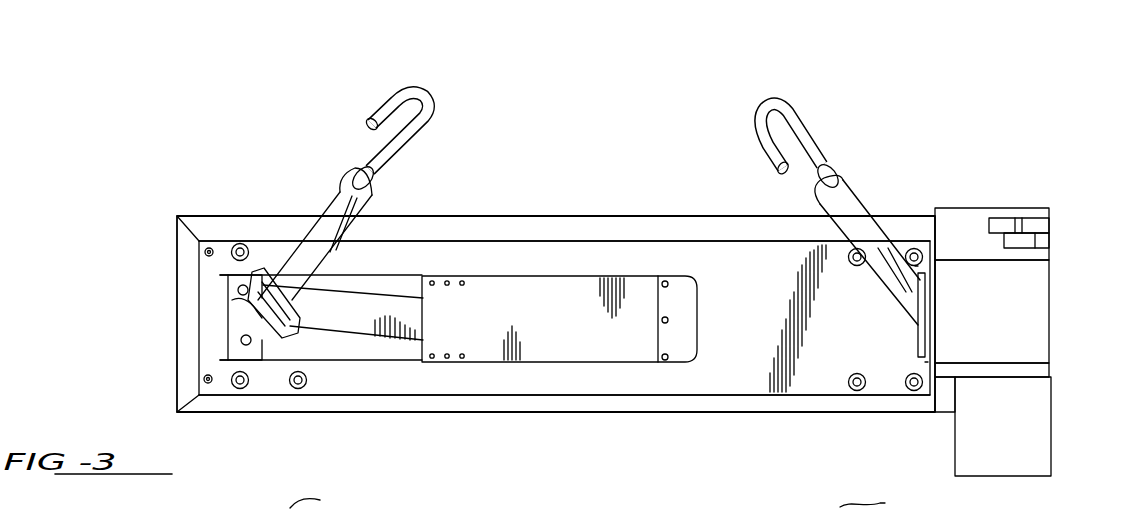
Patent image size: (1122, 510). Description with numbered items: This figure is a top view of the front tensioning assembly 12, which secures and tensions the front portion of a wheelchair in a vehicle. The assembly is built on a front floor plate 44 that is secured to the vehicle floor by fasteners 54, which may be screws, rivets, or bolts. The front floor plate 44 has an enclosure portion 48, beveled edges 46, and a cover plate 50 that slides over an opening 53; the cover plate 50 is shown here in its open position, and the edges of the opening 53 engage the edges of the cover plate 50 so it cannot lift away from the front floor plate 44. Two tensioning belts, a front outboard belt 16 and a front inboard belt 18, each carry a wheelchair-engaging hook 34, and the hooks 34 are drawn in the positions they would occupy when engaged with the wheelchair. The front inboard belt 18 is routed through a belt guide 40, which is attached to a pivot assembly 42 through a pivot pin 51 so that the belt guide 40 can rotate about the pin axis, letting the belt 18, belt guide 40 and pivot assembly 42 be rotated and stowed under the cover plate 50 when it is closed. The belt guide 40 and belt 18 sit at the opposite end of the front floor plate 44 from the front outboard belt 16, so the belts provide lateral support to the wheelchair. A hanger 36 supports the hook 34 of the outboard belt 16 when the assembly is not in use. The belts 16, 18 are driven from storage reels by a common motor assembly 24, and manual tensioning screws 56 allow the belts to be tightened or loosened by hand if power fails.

The front tensioning assembly 12 is at (1035, 32).
The front outboard belt 16 is at (880, 235).
The front inboard belt 18 is at (310, 230).
The motor assembly 24 is at (1030, 425).
The wheelchair-engaging hooks 34 is at (430, 100).
The hanger 36 is at (880, 498).
The belt guide 40 is at (290, 333).
The pivot assembly 42 is at (233, 318).
The front floor plate 44 is at (538, 247).
The beveled edges 46 is at (670, 230).
The enclosure portion 48 is at (400, 352).
The cover plate 50 is at (620, 350).
The pivot pin 51 is at (260, 318).
The opening 53 is at (400, 285).
The fasteners 54 is at (241, 250).
The manual tensioning screws 56 is at (1040, 227).